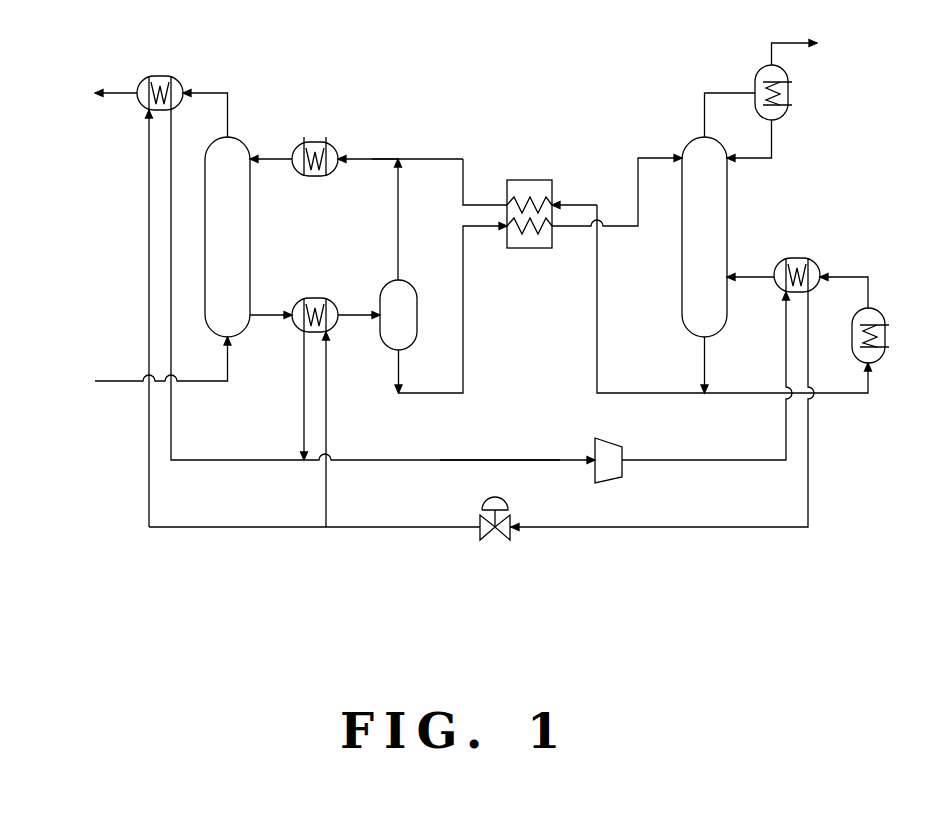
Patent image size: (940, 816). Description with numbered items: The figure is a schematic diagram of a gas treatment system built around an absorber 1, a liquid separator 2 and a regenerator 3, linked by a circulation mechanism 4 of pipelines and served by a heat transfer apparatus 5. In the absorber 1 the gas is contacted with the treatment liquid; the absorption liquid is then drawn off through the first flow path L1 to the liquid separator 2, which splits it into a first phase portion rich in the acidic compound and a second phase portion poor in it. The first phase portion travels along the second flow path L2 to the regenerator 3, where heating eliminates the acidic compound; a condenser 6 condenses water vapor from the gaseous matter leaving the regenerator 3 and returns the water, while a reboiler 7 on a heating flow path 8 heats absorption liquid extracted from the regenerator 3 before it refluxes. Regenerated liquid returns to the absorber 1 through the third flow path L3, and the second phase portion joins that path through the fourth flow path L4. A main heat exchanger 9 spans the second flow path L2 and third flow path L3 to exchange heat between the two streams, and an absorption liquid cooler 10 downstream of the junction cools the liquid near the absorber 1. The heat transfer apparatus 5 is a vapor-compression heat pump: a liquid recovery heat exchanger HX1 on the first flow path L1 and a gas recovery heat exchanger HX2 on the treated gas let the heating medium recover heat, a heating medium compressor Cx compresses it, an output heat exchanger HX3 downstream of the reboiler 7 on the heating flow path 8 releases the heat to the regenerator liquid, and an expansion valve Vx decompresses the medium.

The absorber 1 is at (232, 138).
The liquid separator 2 is at (409, 280).
The regenerator 3 is at (695, 138).
The circulation mechanism 4 is at (372, 152).
The heat transfer apparatus 5 is at (488, 453).
The condenser 6 is at (758, 78).
The reboiler 7 is at (879, 310).
The heating flow path 8 is at (847, 276).
The main heat exchanger 9 is at (527, 180).
The absorption liquid cooler 10 is at (312, 177).
The liquid recovery heat exchanger HX1 is at (312, 296).
The gas recovery heat exchanger HX2 is at (160, 76).
The output heat exchanger HX3 is at (797, 257).
The first flow path L1 is at (356, 323).
The second flow path L2 is at (467, 301).
The third flow path L3 is at (433, 159).
The fourth flow path L4 is at (398, 222).
The heating medium compressor Cx is at (594, 442).
The expansion valve Vx is at (480, 521).